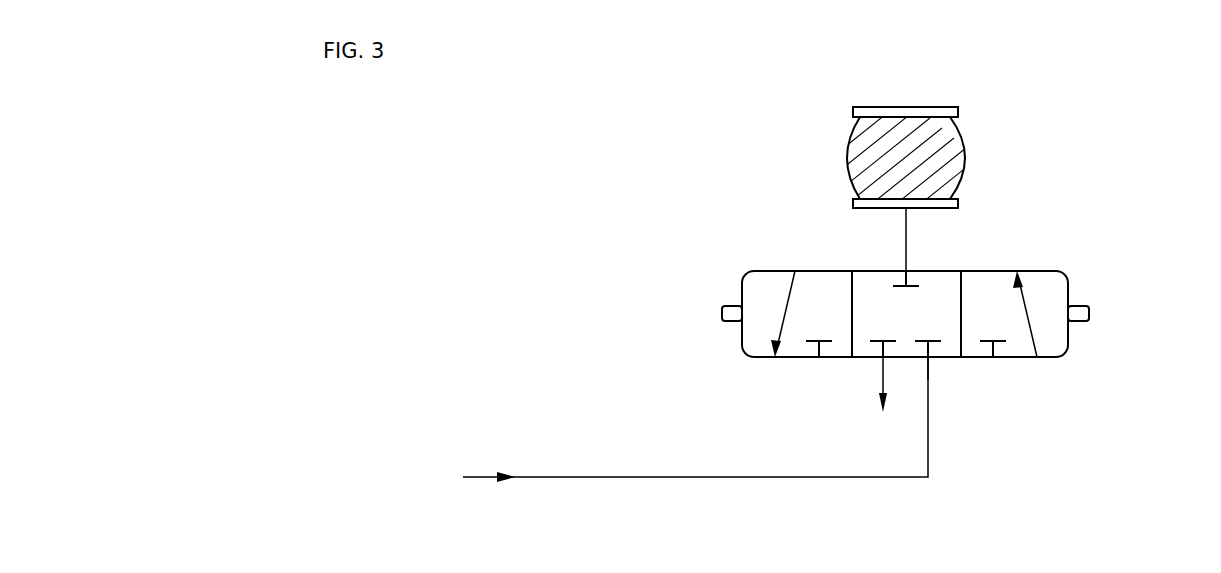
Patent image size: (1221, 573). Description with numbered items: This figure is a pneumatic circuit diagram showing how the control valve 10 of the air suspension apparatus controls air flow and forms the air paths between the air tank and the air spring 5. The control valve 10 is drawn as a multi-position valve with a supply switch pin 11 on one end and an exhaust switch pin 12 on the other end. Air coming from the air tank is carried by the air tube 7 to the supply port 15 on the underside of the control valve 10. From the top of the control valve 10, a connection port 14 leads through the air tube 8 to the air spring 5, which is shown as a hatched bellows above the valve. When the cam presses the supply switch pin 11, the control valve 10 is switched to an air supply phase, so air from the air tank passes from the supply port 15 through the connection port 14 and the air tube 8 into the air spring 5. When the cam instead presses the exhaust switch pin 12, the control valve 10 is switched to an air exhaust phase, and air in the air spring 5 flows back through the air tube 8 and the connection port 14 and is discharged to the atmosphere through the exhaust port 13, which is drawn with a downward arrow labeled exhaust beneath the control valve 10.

The air spring 5 is at (965, 133).
The air tube 7 is at (597, 477).
The air tube 8 is at (906, 235).
The control valve 10 is at (1070, 264).
The supply switch pin 11 is at (1089, 313).
The exhaust switch pin 12 is at (722, 312).
The exhaust port 13 is at (882, 357).
The connection port 14 is at (906, 270).
The supply port 15 is at (930, 357).